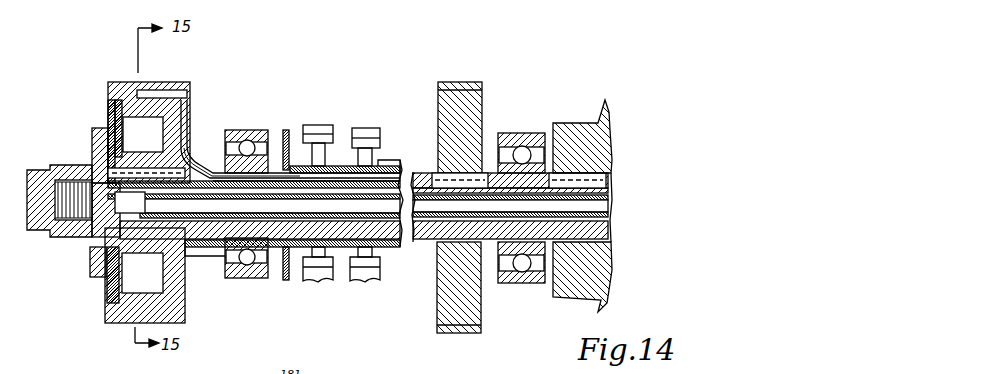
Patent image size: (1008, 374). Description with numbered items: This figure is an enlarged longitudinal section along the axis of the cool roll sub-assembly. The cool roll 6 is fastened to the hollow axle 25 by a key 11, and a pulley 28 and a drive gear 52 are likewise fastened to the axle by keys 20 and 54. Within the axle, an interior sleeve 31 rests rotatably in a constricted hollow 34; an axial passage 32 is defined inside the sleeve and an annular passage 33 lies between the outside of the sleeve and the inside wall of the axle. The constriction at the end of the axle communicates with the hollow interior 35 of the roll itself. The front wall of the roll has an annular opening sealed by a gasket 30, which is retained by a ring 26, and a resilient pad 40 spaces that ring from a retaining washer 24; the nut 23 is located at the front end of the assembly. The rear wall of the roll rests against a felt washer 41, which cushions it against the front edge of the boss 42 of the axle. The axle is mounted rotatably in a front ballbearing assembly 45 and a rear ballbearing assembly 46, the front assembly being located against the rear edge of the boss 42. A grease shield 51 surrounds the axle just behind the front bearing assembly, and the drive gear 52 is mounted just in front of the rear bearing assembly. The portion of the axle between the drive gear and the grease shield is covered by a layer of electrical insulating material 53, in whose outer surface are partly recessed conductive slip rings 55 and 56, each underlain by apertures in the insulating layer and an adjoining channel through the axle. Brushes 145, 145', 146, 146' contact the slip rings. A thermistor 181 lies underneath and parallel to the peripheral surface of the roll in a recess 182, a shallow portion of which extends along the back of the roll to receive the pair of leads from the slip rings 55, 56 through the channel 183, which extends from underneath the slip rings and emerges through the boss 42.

The cool roll 6 is at (127, 82).
The key 11 is at (135, 168).
The key 20 is at (607, 168).
The nut 23 is at (34, 232).
The retaining washer 24 is at (90, 262).
The axle 25 is at (609, 233).
The ring 26 is at (108, 108).
The pulley 28 is at (610, 122).
The gasket 30 is at (124, 133).
The interior sleeve 31 is at (607, 216).
The axial passage 32 is at (600, 207).
The annular passage 33 is at (607, 193).
The constricted hollow 34 is at (138, 250).
The interior of the roll 35 is at (132, 312).
The resilient pad 40 is at (107, 280).
The felt washer 41 is at (190, 250).
The boss 42 is at (214, 262).
The front ballbearing assembly 45 is at (243, 212).
The rear ballbearing assembly 46 is at (520, 284).
The grease shield 51 is at (287, 130).
The drive gear 52 is at (470, 108).
The electrical insulating material 53 is at (396, 175).
The key 54 is at (486, 172).
The conductive slip ring 55 is at (332, 168).
The conductive slip ring 56 is at (380, 165).
The brush 145 is at (320, 132).
The brush 146 is at (371, 130).
The brush 145' is at (312, 279).
The brush 146' is at (367, 279).
The thermistor 181 is at (152, 90).
The recess 182 is at (189, 108).
The channel 183 is at (213, 166).